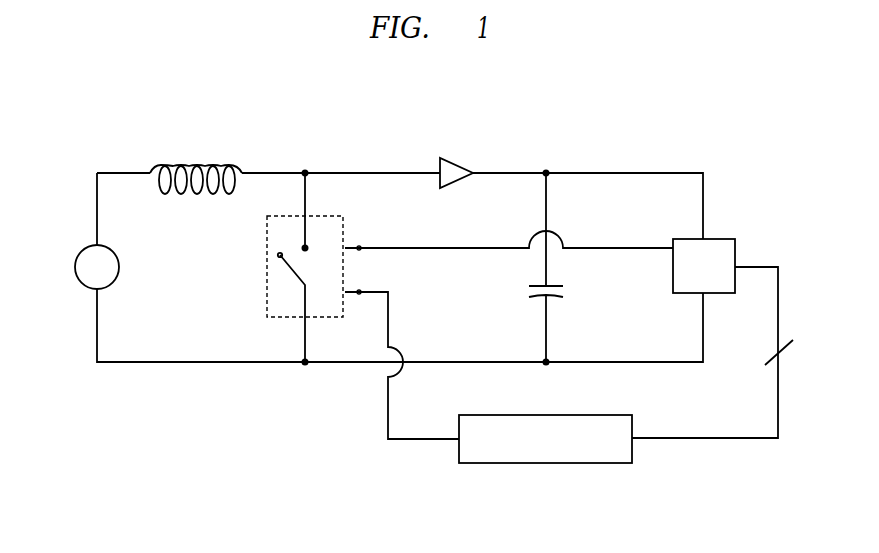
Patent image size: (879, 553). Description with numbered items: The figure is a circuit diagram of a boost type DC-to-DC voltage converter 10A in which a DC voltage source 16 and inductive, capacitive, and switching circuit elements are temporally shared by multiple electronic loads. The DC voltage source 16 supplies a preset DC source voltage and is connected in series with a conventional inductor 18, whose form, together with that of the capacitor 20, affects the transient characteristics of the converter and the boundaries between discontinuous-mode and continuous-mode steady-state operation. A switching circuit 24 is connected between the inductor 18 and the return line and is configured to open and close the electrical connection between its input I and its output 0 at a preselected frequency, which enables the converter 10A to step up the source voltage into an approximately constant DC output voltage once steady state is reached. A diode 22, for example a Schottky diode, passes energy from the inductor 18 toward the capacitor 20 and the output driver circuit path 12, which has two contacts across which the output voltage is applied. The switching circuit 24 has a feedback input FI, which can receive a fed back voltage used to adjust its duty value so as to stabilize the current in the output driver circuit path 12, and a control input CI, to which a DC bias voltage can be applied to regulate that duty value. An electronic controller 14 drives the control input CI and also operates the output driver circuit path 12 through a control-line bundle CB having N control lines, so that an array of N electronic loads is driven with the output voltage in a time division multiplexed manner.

The boost DC-to-DC voltage converter 10A is at (727, 158).
The output driver circuit path 12 is at (717, 281).
The electronic controller 14 is at (458, 460).
The DC voltage source 16 is at (80, 280).
The inductor 18 is at (210, 157).
The capacitor 20 is at (518, 305).
The diode 22 is at (455, 158).
The switching circuit 24 is at (267, 297).
The output of switching circuit 0 is at (297, 322).
The input of switching circuit I is at (303, 216).
The feedback input FI is at (347, 247).
The control input CI is at (347, 292).
The control-line bundle CB is at (780, 320).
The number of electronic loads N is at (786, 359).